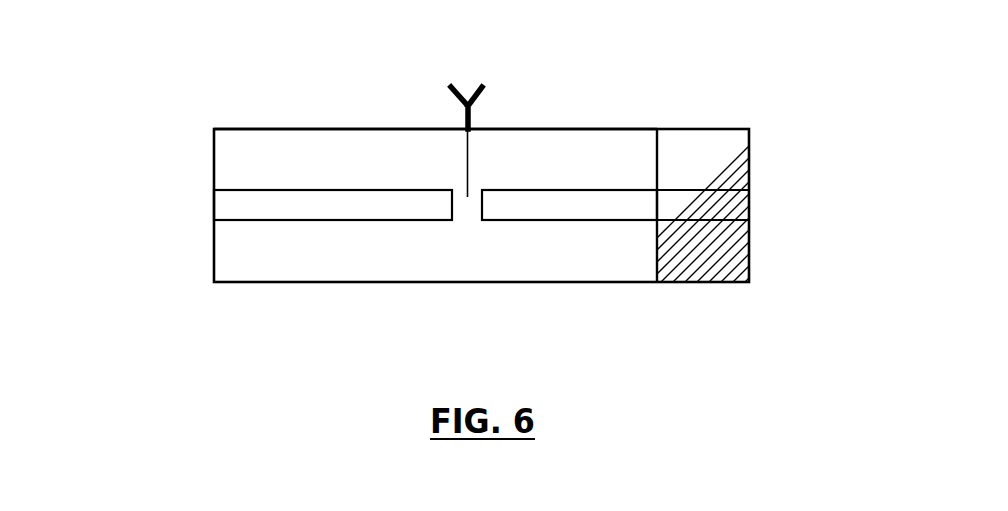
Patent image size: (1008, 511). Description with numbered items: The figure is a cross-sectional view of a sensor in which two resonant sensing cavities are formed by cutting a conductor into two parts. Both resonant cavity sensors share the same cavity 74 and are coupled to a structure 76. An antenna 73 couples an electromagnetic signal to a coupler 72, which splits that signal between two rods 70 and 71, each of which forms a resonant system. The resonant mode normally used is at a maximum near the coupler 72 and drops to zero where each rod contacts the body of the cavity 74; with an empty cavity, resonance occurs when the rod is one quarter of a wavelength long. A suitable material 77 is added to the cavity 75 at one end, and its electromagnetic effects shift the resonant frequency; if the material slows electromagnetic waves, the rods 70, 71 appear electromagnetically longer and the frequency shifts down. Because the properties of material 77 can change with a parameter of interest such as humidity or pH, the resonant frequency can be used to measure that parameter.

The rod 70 is at (302, 212).
The rod 71 is at (548, 213).
The coupler 72 is at (468, 173).
The antenna 73 is at (478, 103).
The cavity 74 is at (355, 128).
The cavity 75 is at (735, 163).
The structure 76 is at (87, 293).
The material 77 is at (712, 260).